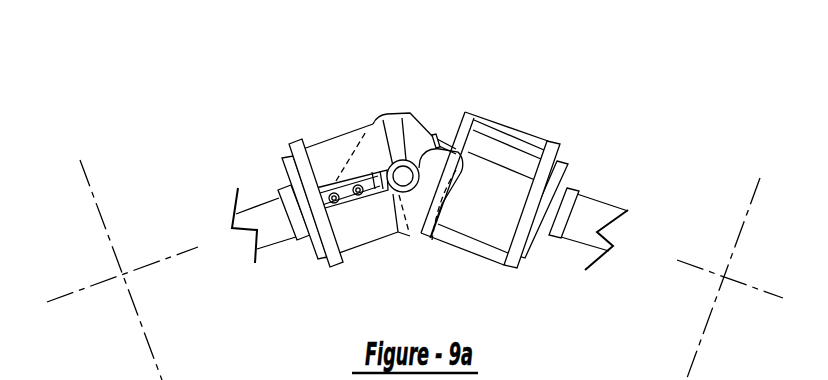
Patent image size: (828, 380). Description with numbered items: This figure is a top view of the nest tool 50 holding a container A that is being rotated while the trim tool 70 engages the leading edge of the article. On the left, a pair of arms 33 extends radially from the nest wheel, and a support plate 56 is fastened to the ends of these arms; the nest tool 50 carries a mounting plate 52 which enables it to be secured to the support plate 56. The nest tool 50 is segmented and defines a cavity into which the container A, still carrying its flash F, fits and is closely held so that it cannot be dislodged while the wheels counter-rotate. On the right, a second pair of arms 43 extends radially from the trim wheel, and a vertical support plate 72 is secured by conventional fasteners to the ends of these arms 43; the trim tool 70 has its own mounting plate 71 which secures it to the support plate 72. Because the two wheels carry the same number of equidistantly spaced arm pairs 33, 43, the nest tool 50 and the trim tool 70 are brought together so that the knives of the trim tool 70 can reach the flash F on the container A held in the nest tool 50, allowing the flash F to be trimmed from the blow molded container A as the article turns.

The arm pairs 33 is at (270, 218).
The mounting plate 52 is at (333, 263).
The nest tool 50 is at (331, 141).
The support plate 56 is at (291, 160).
The container A is at (387, 134).
The flash F is at (405, 166).
The trim tool 70 is at (511, 121).
The mounting plate 71 is at (553, 140).
The vertical support plate 72 is at (518, 245).
The arm pairs 43 is at (582, 218).